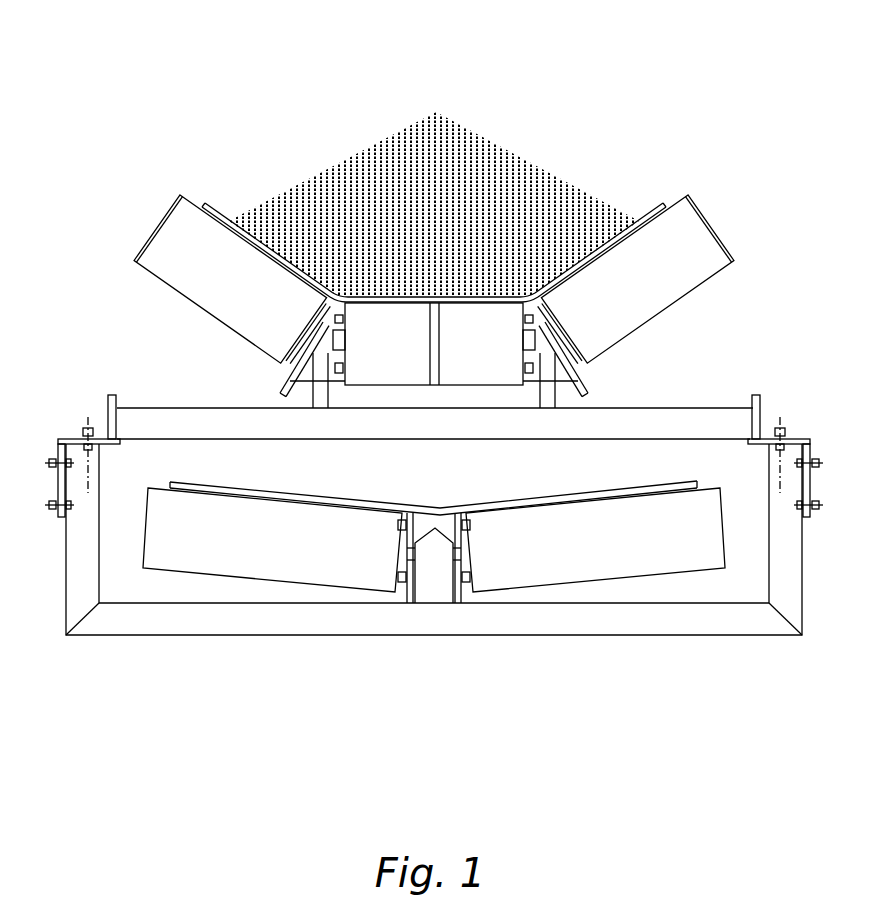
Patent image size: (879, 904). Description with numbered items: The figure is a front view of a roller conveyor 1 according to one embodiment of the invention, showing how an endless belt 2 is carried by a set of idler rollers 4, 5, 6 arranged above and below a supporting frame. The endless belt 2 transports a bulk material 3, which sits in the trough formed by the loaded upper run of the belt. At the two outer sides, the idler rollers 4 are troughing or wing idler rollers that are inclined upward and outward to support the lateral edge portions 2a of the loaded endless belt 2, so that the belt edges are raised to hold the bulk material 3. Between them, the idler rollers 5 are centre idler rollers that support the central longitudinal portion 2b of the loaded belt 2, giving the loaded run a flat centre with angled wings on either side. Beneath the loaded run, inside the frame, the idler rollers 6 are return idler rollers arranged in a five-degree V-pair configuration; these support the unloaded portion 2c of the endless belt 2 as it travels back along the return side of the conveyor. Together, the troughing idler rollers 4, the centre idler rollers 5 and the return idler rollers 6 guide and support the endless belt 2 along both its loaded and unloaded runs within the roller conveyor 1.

The roller conveyor 1 is at (165, 117).
The endless belt 2 is at (228, 213).
The lateral edge portions 2a is at (645, 210).
The central longitudinal portion 2b is at (447, 303).
The unloaded portion 2c is at (343, 507).
The bulk material 3 is at (318, 200).
The idler rollers 4 is at (167, 248).
The idler rollers 5 is at (335, 382).
The idler rollers 6 is at (278, 532).